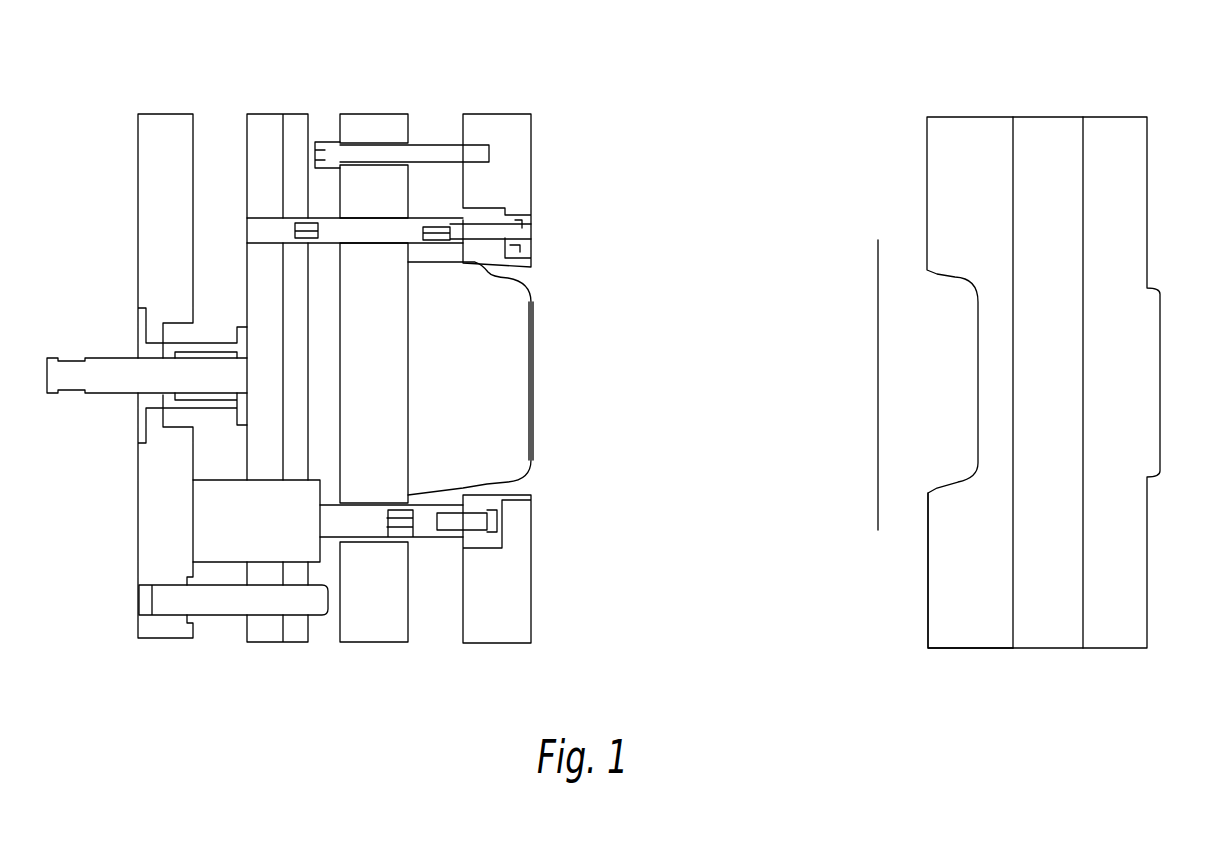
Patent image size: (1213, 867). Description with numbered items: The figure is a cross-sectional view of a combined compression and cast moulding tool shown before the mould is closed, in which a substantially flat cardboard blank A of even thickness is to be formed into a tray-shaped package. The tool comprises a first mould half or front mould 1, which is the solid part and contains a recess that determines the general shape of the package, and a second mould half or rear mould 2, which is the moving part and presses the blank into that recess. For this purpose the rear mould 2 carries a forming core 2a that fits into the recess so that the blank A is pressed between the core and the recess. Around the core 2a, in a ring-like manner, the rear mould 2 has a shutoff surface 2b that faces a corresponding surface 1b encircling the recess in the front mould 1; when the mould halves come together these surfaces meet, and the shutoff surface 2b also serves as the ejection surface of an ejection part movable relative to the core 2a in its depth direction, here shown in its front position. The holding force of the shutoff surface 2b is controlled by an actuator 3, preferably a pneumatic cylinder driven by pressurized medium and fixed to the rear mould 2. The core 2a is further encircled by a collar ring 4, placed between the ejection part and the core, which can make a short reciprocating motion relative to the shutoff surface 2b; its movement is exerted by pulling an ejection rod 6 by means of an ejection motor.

The first mould half 1 is at (973, 92).
The corresponding surface 1b is at (927, 552).
The rear mould 2 is at (313, 378).
The forming core 2a is at (506, 371).
The shutoff surface 2b is at (532, 158).
The actuator 3 is at (222, 548).
The collar ring 4 is at (530, 270).
The ejection rod 6 is at (95, 367).
The cardboard blank A is at (878, 385).